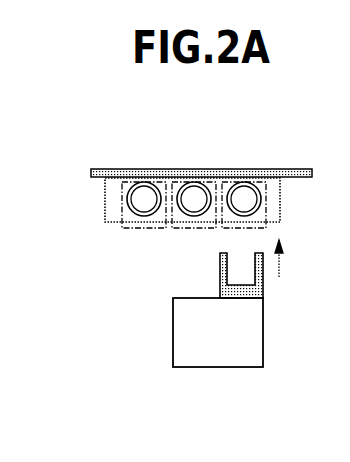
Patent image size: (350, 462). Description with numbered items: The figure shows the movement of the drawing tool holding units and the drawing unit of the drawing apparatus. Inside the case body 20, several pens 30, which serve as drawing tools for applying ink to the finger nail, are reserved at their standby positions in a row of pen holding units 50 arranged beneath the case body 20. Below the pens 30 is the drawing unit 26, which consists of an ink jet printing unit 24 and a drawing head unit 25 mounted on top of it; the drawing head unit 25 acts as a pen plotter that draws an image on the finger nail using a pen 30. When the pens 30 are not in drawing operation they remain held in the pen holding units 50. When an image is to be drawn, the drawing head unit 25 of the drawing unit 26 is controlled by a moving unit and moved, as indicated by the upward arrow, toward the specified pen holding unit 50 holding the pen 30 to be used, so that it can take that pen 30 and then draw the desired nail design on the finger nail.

The case body 20 is at (287, 169).
The pen 30 is at (244, 195).
The pen holding unit 50 is at (240, 229).
The ink jet printing unit 24 is at (312, 282).
The drawing head unit 25 is at (263, 282).
The drawing unit 26 is at (260, 310).